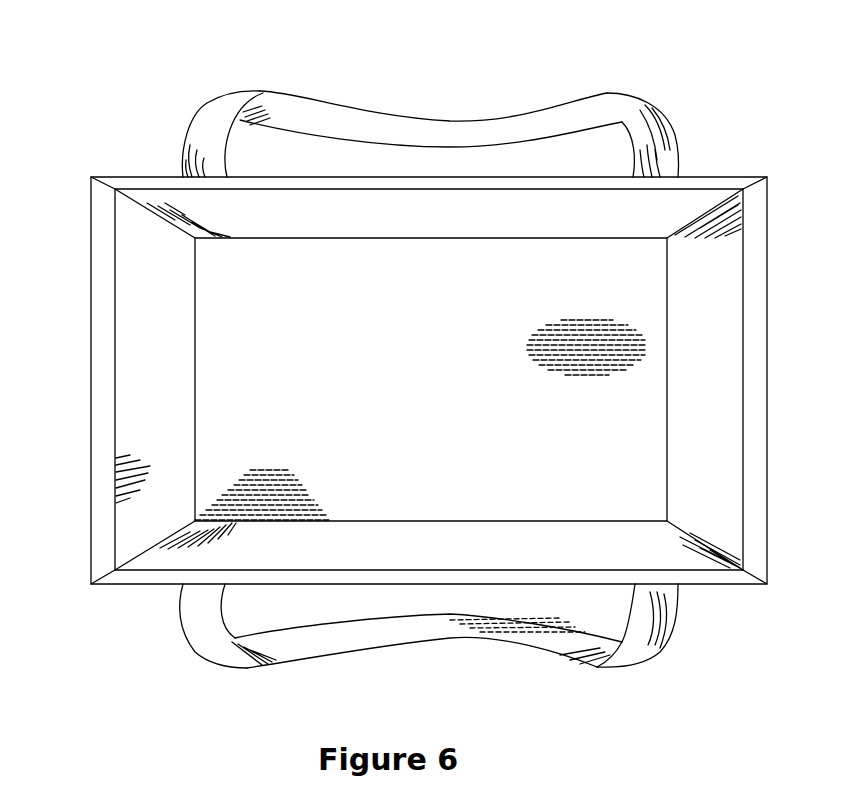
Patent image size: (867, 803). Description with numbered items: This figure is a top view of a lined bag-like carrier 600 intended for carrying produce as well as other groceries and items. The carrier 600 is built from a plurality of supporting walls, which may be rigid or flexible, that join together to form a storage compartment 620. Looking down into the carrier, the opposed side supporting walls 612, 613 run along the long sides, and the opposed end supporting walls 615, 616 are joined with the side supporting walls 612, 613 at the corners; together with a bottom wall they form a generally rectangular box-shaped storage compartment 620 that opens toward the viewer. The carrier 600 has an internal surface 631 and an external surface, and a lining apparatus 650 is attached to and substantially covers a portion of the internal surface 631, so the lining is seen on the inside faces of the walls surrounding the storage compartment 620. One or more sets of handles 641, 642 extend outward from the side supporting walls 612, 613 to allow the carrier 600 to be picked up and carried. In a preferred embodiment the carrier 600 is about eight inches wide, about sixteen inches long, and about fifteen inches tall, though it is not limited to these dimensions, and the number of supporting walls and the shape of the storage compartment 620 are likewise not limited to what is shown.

The lined bag-like carrier 600 is at (215, 715).
The side supporting wall 612 is at (429, 605).
The side supporting wall 613 is at (418, 156).
The end supporting wall 615 is at (102, 558).
The end supporting wall 616 is at (741, 345).
The storage compartment 620 is at (514, 262).
The internal surface 631 is at (716, 186).
The handle 641 is at (430, 108).
The handle 642 is at (429, 647).
The lining apparatus 650 is at (406, 367).